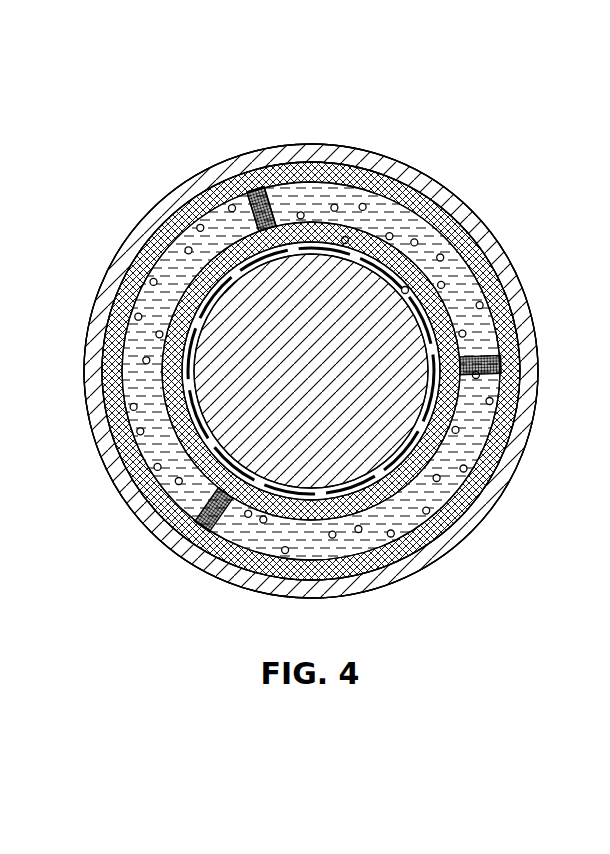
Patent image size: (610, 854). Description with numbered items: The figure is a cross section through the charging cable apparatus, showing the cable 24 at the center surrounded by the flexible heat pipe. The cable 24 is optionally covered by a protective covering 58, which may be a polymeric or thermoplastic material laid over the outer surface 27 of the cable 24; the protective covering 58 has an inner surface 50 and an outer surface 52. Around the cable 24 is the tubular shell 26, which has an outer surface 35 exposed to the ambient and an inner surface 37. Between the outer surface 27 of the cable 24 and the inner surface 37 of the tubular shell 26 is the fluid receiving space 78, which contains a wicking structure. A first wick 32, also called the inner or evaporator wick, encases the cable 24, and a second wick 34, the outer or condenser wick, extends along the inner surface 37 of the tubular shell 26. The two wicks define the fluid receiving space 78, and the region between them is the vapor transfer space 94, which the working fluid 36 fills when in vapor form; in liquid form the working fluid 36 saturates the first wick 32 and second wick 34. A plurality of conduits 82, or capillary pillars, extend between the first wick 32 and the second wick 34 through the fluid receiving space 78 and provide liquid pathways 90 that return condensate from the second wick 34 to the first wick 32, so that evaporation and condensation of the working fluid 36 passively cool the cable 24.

The cable 24 is at (390, 502).
The tubular shell 26 is at (157, 207).
The outer surface of the cable 27 is at (127, 493).
The first wick 32 is at (347, 493).
The second wick 34 is at (443, 193).
The outer surface of the tubular shell 35 is at (343, 150).
The working fluid 36 is at (198, 203).
The inner surface of the tubular shell 37 is at (272, 173).
The inner surface of the protective covering 50 is at (418, 393).
The outer surface of the protective covering 52 is at (460, 407).
The protective covering 58 is at (405, 338).
The fluid receiving space 78 is at (311, 378).
The conduits 82 is at (298, 247).
The liquid pathways 90 is at (500, 342).
The vapor transfer space 94 is at (440, 254).